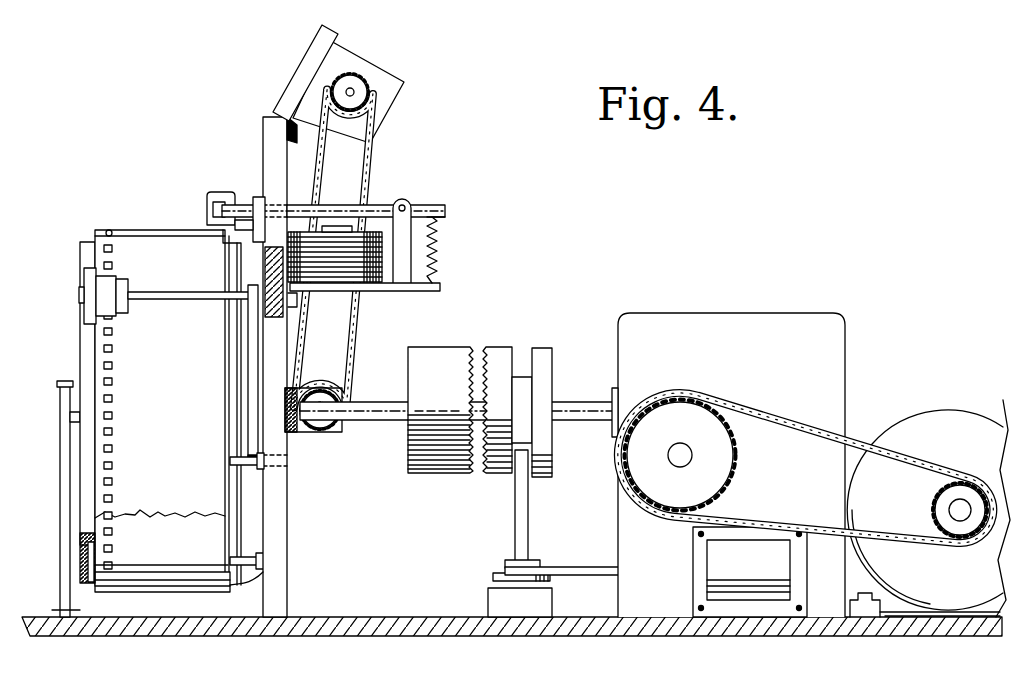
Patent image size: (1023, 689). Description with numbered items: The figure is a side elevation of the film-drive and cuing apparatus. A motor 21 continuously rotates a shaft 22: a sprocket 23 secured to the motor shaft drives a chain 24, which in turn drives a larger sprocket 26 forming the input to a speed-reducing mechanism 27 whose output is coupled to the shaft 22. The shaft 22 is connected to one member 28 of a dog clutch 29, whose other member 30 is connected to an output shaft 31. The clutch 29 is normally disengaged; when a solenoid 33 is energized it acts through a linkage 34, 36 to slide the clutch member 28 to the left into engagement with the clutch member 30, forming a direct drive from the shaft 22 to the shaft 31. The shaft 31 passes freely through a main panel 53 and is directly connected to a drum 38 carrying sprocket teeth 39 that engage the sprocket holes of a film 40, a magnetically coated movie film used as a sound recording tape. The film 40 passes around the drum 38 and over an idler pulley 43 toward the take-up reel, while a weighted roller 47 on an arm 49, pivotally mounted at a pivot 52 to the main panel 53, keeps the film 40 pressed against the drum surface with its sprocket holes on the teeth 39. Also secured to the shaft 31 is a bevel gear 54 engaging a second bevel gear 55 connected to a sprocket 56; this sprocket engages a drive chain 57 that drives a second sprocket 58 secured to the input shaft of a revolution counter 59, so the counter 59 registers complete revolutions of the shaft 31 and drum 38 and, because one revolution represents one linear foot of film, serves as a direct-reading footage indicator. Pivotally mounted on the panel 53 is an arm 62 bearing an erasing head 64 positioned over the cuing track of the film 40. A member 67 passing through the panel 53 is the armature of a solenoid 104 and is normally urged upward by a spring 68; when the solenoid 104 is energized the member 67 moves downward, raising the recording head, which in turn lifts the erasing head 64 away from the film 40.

The motor 21 is at (958, 412).
The shaft 22 is at (583, 401).
The sprocket 23 is at (940, 503).
The chain 24 is at (897, 459).
The larger sprocket 26 is at (733, 450).
The speed-reducing mechanism 27 is at (836, 365).
The clutch member 28 is at (543, 352).
The dog clutch 29 is at (485, 345).
The clutch member 30 is at (421, 474).
The output shaft 31 is at (366, 421).
The solenoid 33 is at (790, 560).
The linkage 34 is at (576, 567).
The linkage 36 is at (528, 518).
The drum 38 is at (287, 590).
The sprocket teeth 39 is at (106, 248).
The film 40 is at (148, 516).
The idler pulley 43 is at (90, 582).
The weighted roller 47 is at (84, 290).
The arm 49 is at (250, 337).
The pivot 52 is at (264, 462).
The main panel 53 is at (263, 127).
The bevel gear 54 is at (296, 435).
The second bevel gear 55 is at (318, 390).
The sprocket 56 is at (332, 433).
The drive chain 57 is at (354, 333).
The second sprocket 58 is at (354, 96).
The revolution counter 59 is at (352, 62).
The arm 62 is at (213, 208).
The erasing head 64 is at (217, 192).
The member 67 is at (244, 204).
The spring 68 is at (440, 238).
The solenoid 104 is at (372, 282).